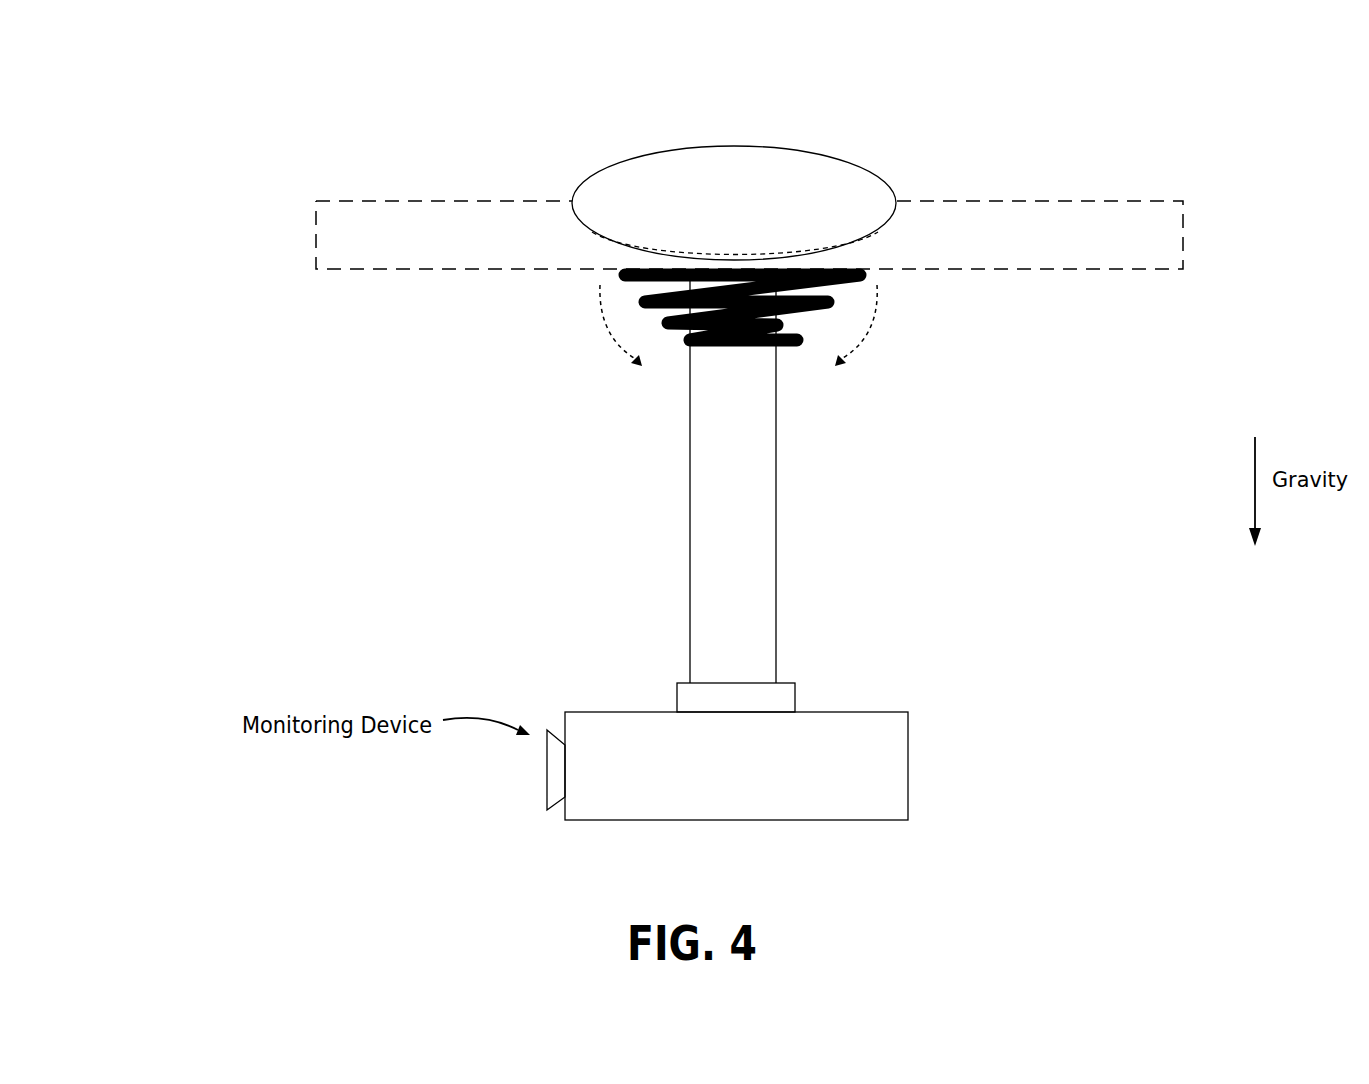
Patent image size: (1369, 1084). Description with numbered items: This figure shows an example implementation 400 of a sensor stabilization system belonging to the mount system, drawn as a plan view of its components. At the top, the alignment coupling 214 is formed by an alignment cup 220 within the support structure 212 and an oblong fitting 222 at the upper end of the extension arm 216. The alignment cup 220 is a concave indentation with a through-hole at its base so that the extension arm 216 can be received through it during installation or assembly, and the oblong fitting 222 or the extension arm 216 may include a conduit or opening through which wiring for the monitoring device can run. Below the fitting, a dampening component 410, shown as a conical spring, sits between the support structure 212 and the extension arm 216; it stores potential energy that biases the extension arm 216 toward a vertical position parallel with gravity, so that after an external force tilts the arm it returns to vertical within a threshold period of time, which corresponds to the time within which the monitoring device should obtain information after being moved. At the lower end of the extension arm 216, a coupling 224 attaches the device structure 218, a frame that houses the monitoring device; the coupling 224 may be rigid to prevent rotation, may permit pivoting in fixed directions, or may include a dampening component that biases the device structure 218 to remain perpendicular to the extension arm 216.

The example implementation 400 is at (172, 63).
The support structure 212 is at (348, 252).
The alignment coupling 214 is at (545, 163).
The oblong fitting 222 is at (875, 173).
The alignment cup 220 is at (595, 236).
The dampening component 410 is at (686, 340).
The extension arm 216 is at (776, 516).
The coupling 224 is at (795, 698).
The device structure 218 is at (908, 767).